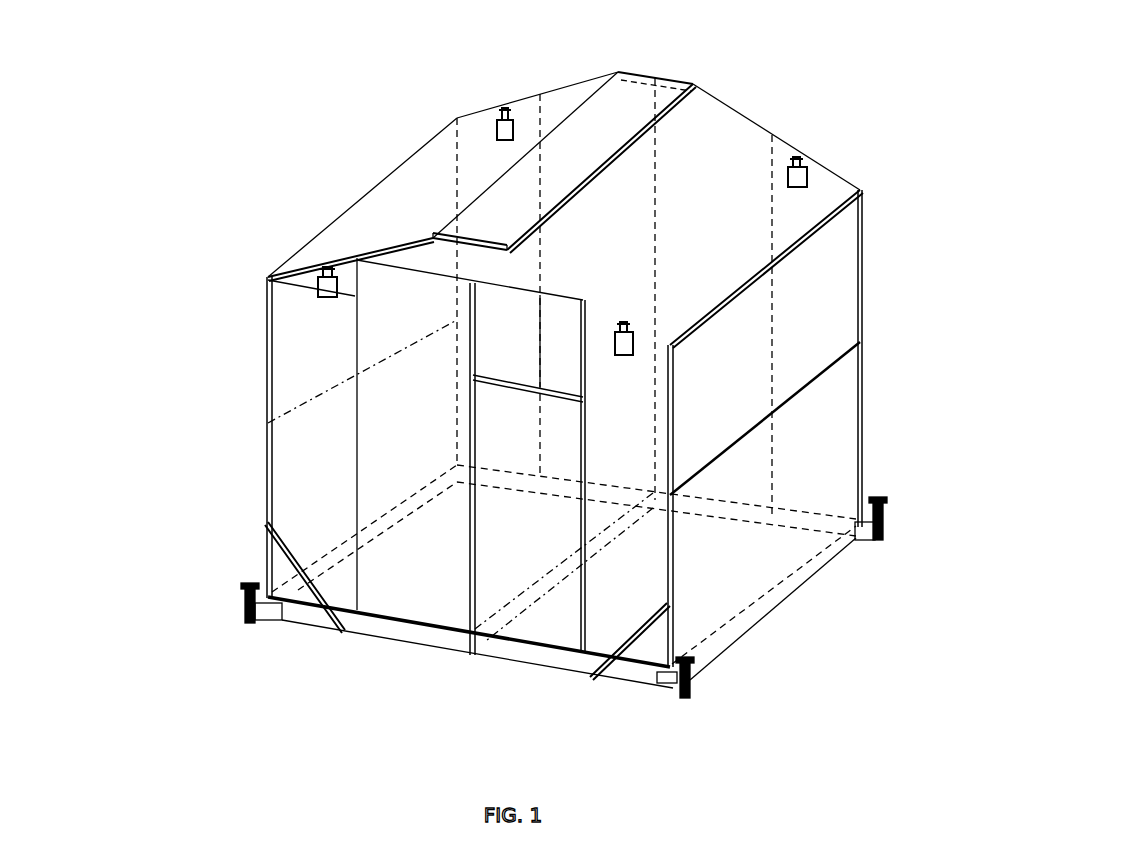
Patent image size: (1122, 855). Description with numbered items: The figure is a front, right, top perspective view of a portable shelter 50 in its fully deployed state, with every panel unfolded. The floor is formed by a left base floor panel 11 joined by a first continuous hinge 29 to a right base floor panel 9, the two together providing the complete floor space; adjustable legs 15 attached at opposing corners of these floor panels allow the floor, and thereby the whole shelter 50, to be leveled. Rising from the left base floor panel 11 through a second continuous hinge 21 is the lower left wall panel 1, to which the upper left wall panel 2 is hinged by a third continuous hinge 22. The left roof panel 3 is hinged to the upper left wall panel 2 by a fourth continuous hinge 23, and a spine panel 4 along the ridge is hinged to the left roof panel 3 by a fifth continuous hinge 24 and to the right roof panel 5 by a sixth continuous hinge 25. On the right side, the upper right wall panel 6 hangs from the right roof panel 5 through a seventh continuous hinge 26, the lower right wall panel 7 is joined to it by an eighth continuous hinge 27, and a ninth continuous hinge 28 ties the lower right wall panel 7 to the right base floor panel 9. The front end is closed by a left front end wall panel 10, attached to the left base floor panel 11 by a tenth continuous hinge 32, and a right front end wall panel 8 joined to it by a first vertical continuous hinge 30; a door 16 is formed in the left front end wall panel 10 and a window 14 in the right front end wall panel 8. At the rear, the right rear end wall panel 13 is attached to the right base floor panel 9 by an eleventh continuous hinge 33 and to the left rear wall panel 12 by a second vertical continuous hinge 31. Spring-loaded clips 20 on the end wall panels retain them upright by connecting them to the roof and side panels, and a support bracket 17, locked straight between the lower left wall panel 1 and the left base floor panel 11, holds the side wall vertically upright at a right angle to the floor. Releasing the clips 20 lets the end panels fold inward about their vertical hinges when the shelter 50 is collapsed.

The shelter 50 is at (258, 58).
The lower left wall panel 1 is at (263, 478).
The upper left wall panel 2 is at (263, 368).
The left roof panel 3 is at (350, 223).
The spine panel 4 is at (633, 100).
The right roof panel 5 is at (632, 155).
The upper right wall panel 6 is at (833, 290).
The lower right wall panel 7 is at (835, 447).
The right front end wall panel 8 is at (600, 652).
The right base floor panel 9 is at (505, 660).
The left front end wall panel 10 is at (412, 578).
The left base floor panel 11 is at (373, 635).
The left rear wall panel 12 is at (617, 222).
The right rear end wall panel 13 is at (740, 230).
The window 14 is at (470, 323).
The adjustable legs 15 is at (230, 622).
The door 16 is at (528, 399).
The support bracket 17 is at (613, 65).
The spring-loaded clips 20 is at (490, 128).
The second continuous hinge 21 is at (383, 525).
The third continuous hinge 22 is at (335, 398).
The fourth continuous hinge 23 is at (265, 280).
The fifth continuous hinge 24 is at (427, 232).
The sixth continuous hinge 25 is at (740, 140).
The seventh continuous hinge 26 is at (862, 190).
The eighth continuous hinge 27 is at (830, 377).
The ninth continuous hinge 28 is at (775, 577).
The first continuous hinge 29 is at (598, 560).
The first vertical continuous hinge 30 is at (462, 590).
The second vertical continuous hinge 31 is at (658, 184).
The tenth continuous hinge 32 is at (303, 607).
The eleventh continuous hinge 33 is at (737, 513).